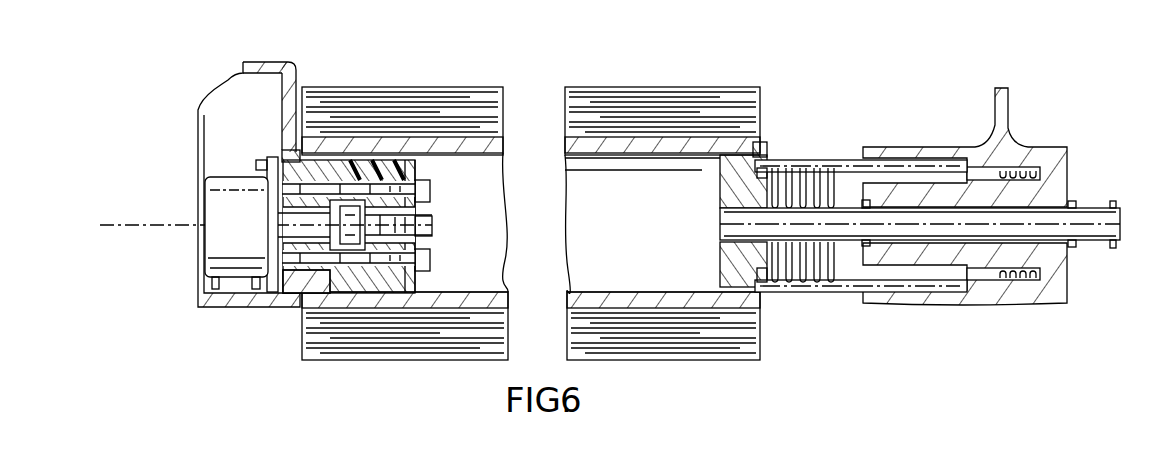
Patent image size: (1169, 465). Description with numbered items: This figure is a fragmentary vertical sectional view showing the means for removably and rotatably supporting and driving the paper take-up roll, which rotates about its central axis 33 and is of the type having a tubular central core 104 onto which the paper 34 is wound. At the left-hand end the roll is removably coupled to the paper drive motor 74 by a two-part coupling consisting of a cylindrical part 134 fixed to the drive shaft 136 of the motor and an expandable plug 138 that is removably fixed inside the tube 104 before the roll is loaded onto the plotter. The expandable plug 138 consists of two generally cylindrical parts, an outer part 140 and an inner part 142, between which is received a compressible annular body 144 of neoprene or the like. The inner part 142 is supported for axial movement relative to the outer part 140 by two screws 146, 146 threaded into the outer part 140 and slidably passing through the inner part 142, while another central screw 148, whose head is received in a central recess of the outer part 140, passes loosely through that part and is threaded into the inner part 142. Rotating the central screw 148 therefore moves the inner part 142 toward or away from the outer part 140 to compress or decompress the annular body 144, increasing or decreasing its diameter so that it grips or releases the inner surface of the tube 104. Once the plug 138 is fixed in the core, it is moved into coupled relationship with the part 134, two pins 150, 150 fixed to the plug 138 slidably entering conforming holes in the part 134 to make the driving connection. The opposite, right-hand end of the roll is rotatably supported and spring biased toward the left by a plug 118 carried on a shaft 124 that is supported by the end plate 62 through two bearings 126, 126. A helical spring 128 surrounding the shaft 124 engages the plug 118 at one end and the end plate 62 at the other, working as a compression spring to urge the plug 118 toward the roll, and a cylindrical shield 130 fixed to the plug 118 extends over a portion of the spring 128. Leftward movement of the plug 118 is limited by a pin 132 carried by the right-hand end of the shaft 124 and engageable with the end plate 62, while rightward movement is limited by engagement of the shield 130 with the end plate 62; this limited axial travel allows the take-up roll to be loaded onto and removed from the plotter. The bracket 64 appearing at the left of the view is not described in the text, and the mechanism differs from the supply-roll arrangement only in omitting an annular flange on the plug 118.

The central axis 33 is at (172, 218).
The paper 34 is at (455, 88).
The end plate 62 is at (1040, 148).
The bracket 64 is at (270, 62).
The paper drive motor 74 is at (242, 177).
The tubular central core 104 is at (502, 157).
The plug 118 is at (769, 150).
The shaft 124 is at (728, 215).
The bearings 126 is at (870, 203).
The helical spring 128 is at (792, 290).
The cylindrical shield 130 is at (835, 160).
The pin 132 is at (1116, 204).
The cylindrical part 134 is at (278, 160).
The drive shaft 136 is at (280, 220).
The expandable plug 138 is at (292, 150).
The outer part 140 is at (318, 296).
The inner part 142 is at (418, 168).
The compressible annular body 144 is at (383, 156).
The screws 146 is at (432, 191).
The central screw 148 is at (434, 225).
The pins 150 is at (282, 250).